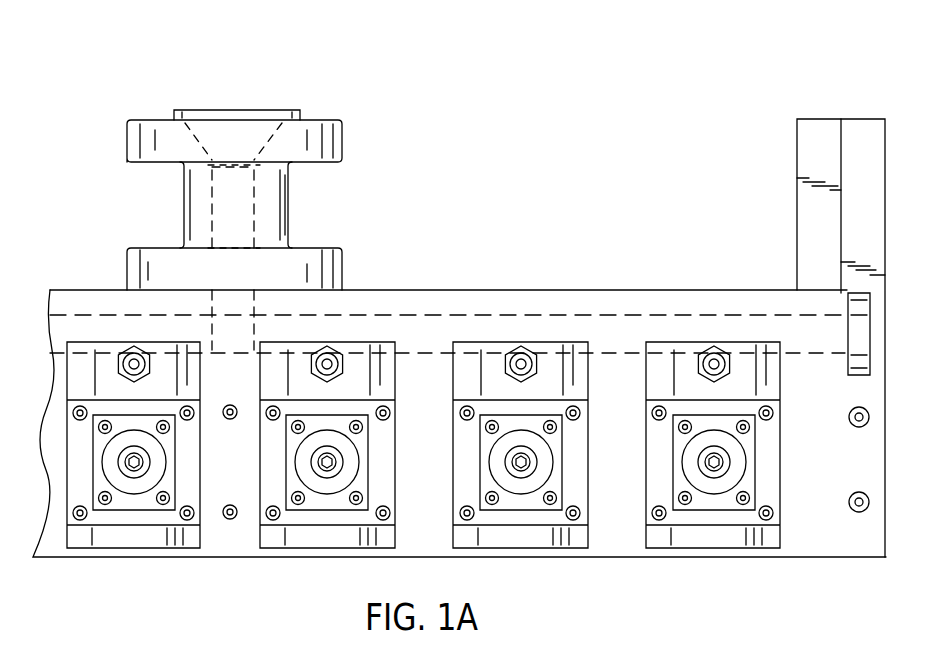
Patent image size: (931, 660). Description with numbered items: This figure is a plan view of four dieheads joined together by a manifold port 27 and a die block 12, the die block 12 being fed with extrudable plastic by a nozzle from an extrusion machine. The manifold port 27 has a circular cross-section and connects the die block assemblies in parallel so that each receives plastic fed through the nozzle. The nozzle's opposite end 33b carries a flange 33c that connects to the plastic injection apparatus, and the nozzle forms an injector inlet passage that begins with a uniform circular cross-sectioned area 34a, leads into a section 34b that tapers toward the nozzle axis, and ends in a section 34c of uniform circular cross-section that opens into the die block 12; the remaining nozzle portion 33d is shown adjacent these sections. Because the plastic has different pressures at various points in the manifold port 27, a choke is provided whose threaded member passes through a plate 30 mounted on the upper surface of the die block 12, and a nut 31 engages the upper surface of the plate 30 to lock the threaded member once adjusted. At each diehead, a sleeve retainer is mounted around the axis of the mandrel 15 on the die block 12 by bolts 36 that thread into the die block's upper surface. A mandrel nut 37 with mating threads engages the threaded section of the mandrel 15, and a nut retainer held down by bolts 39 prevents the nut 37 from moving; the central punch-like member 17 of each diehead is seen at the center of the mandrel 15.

The die block 12 is at (553, 293).
The mandrel 15 is at (134, 460).
The punch shaft 17 is at (325, 462).
The manifold port 27 is at (427, 325).
The plate 30 is at (273, 370).
The nut 31 is at (128, 350).
The opposite end of nozzle 33b is at (302, 116).
The flange 33c is at (333, 138).
The adapter neck 33d is at (282, 207).
The uniform circular cross-sectioned area 34a is at (236, 110).
The tapering section 34b is at (210, 130).
The uniform circular cross-section section 34c is at (222, 205).
The bolts 36 is at (75, 410).
The mandrel nut 37 is at (290, 478).
The bolts 39 is at (98, 430).